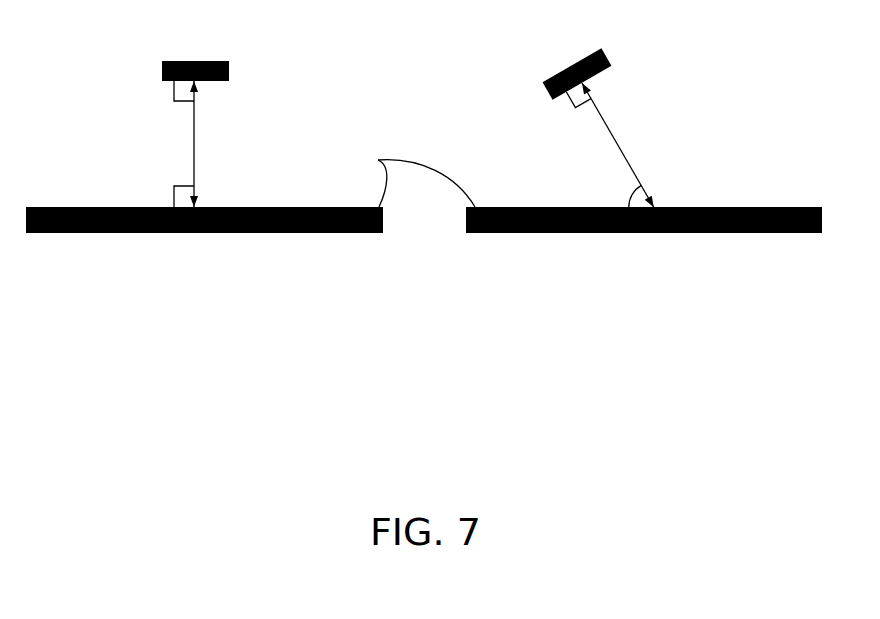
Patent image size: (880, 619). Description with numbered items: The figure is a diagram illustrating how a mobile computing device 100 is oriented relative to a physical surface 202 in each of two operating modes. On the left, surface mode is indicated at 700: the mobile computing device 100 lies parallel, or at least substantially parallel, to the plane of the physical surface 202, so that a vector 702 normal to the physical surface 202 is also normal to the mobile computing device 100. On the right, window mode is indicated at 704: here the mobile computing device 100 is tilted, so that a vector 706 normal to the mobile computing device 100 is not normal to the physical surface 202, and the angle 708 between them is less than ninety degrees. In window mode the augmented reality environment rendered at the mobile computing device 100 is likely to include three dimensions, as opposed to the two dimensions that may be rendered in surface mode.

The mobile computing device 100 is at (193, 61).
The physical surface 202 is at (378, 160).
The surface mode 700 is at (217, 300).
The vector normal to the physical surface 702 is at (193, 146).
The window mode 704 is at (673, 298).
The vector normal to the mobile computing device 706 is at (614, 137).
The angle 708 is at (635, 190).